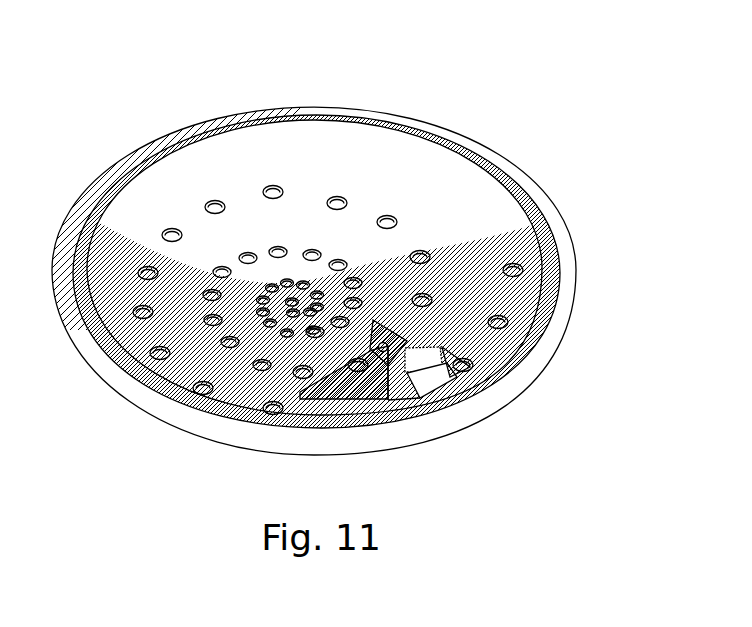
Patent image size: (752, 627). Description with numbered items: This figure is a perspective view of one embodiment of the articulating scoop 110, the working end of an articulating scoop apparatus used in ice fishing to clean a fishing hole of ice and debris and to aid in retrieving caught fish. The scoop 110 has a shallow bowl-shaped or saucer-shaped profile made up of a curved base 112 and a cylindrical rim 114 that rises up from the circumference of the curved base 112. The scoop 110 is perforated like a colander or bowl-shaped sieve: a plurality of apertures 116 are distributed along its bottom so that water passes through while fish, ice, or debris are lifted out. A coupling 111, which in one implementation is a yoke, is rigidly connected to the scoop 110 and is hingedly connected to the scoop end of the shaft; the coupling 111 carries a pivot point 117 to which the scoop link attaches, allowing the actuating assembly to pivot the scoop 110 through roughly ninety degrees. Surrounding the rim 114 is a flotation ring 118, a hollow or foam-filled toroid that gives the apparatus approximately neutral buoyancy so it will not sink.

The articulating scoop 110 is at (426, 90).
The coupling 111 is at (412, 362).
The curved base 112 is at (482, 232).
The cylindrical rim 114 is at (128, 195).
The apertures 116 is at (270, 185).
The pivot point 117 is at (380, 350).
The flotation ring 118 is at (450, 415).